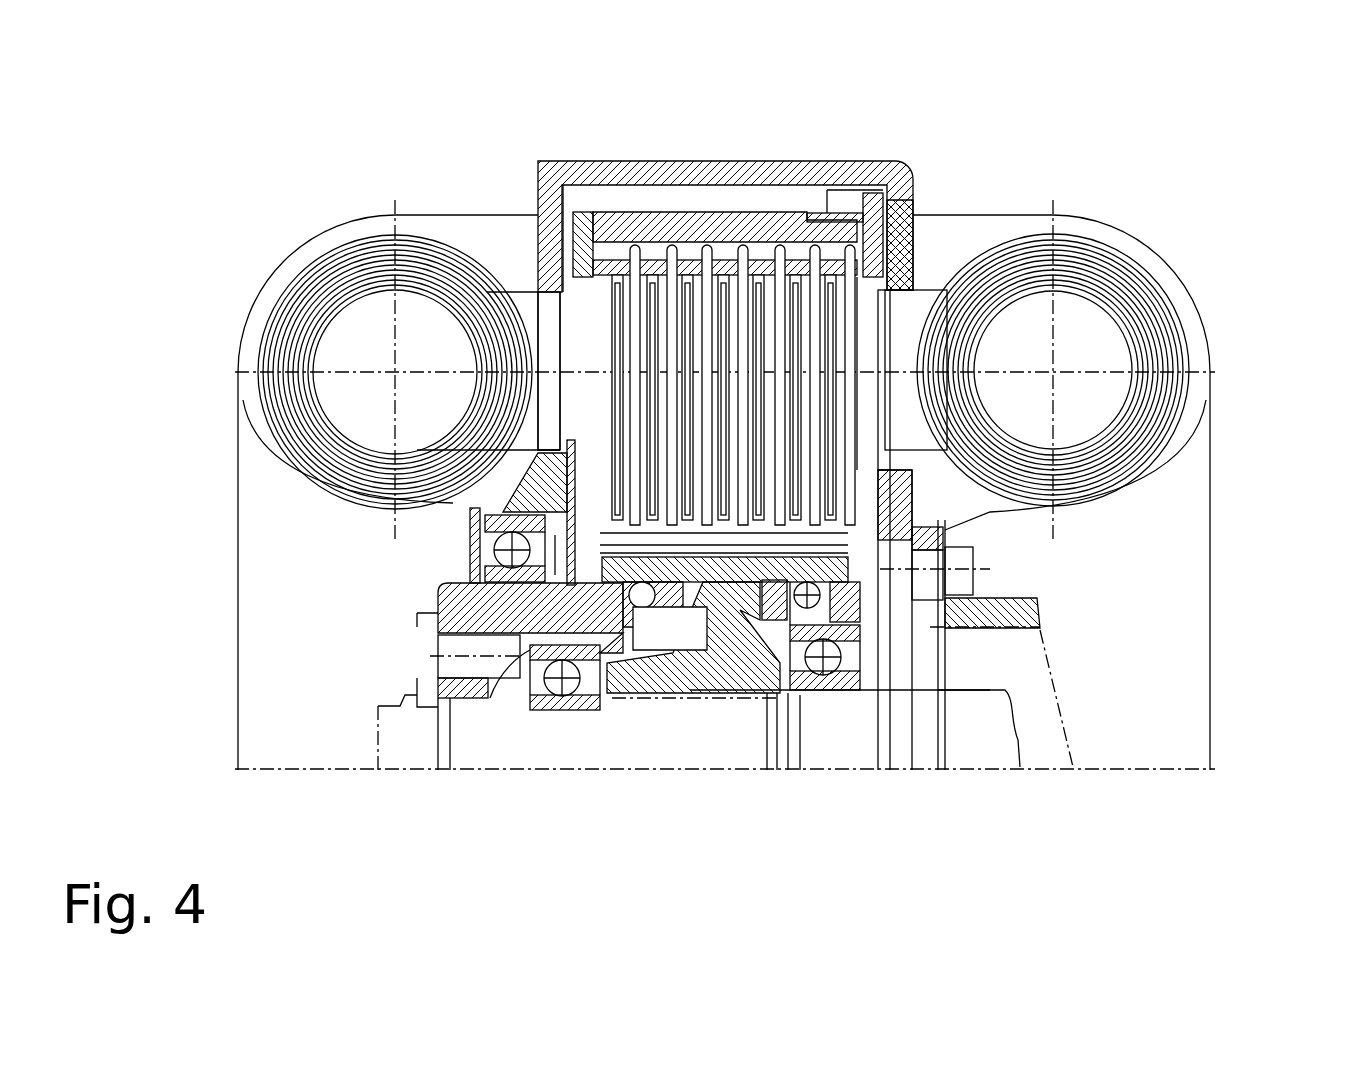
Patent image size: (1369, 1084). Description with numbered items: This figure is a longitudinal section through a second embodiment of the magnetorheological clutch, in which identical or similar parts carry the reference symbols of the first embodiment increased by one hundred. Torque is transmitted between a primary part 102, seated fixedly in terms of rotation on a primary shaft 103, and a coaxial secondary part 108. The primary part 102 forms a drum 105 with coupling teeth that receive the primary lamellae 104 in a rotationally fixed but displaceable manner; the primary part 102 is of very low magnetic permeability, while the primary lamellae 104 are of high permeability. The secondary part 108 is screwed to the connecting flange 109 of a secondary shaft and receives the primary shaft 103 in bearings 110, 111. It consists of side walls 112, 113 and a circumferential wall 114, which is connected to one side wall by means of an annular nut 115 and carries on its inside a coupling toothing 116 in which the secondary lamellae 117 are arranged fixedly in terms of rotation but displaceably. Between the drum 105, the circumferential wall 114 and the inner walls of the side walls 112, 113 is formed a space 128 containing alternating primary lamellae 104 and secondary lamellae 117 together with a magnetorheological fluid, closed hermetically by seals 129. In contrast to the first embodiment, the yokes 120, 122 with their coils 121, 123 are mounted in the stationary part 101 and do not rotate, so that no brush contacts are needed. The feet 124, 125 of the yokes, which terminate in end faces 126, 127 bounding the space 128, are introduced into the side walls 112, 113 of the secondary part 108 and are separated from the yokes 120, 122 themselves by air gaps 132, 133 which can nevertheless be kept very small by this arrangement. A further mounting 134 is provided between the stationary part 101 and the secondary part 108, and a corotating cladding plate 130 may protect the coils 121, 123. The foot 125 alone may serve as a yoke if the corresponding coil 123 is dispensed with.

The stationary part 101 is at (917, 557).
The primary part 102 is at (788, 695).
The primary shaft 103 is at (850, 752).
The primary lamellae 104 is at (590, 210).
The drum 105 is at (700, 552).
The secondary part 108 is at (440, 587).
The connecting flange 109 is at (380, 706).
The bearing 110 is at (550, 700).
The bearing 111 is at (862, 688).
The side wall 112 is at (582, 222).
The side wall 113 is at (863, 533).
The circumferential wall 114 is at (692, 217).
The annular nut 115 is at (867, 303).
The coupling toothing 116 is at (662, 215).
The secondary lamellae 117 is at (745, 258).
The first yoke 120 is at (380, 320).
The first coil 121 is at (322, 300).
The second yoke 122 is at (1082, 333).
The second coil 123 is at (1078, 272).
The foot 124 is at (583, 323).
The foot 125 is at (917, 228).
The end face 126 is at (650, 250).
The end face 127 is at (872, 217).
The space 128 is at (720, 395).
The seals 129 is at (618, 690).
The cladding plate 130 is at (1078, 198).
The air gap 132 is at (880, 420).
The air gap 133 is at (570, 362).
The further mounting 134 is at (507, 557).